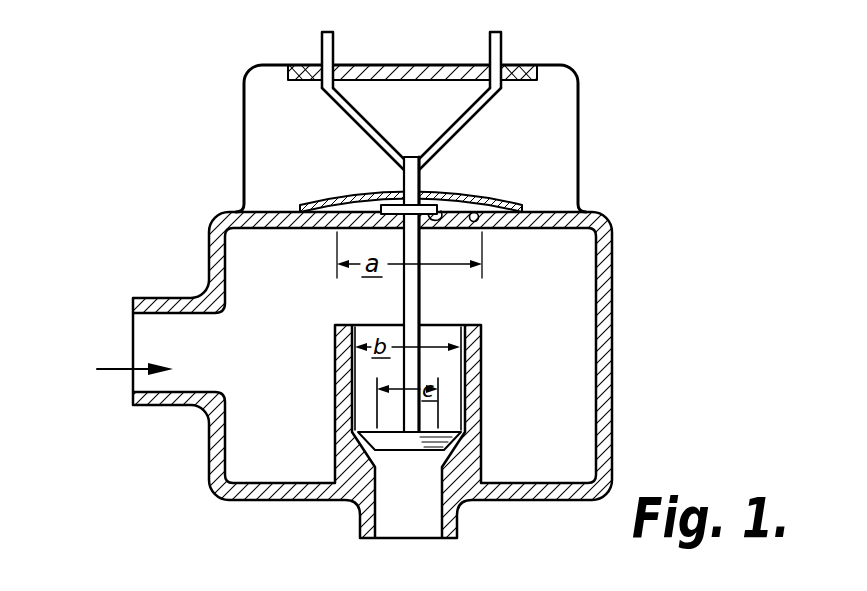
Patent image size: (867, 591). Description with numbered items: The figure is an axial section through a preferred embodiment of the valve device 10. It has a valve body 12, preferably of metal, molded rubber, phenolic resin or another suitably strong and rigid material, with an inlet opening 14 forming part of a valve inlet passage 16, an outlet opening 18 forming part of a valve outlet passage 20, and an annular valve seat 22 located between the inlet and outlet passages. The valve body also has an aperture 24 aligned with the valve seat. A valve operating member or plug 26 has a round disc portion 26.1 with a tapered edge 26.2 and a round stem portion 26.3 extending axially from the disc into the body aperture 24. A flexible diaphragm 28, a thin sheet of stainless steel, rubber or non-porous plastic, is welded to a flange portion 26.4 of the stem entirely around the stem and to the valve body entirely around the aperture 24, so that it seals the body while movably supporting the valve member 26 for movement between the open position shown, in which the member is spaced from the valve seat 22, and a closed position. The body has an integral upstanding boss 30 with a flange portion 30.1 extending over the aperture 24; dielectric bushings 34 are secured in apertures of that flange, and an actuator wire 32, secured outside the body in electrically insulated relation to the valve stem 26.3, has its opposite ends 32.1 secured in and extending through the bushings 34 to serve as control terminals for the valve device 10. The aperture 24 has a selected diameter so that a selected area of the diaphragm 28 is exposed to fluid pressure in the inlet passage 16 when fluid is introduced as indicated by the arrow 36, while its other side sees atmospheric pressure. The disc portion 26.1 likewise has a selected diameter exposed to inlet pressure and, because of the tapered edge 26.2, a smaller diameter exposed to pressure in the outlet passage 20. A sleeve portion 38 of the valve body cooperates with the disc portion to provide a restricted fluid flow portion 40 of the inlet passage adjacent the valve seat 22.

The valve device 10 is at (620, 200).
The valve body 12 is at (608, 326).
The inlet opening 14 is at (145, 337).
The valve inlet passage 16 is at (237, 361).
The outlet opening 18 is at (424, 542).
The valve outlet passage 20 is at (385, 533).
The annular valve seat 22 is at (352, 451).
The aperture 24 is at (484, 204).
The valve operating member 26 is at (428, 298).
The round disc portion 26.1 is at (392, 440).
The tapered edge 26.2 is at (466, 454).
The round stem portion 26.3 is at (404, 300).
The flange portion 26.4 is at (440, 210).
The flexible diaphragm 28 is at (343, 204).
The upstanding boss 30 is at (262, 131).
The boss flange portion 30.1 is at (310, 70).
The actuator wire 32 is at (347, 137).
The actuator wire ends 32.1 is at (325, 37).
The dielectric bushings 34 is at (338, 72).
The arrow 36 is at (112, 372).
The sleeve portion 38 is at (484, 352).
The restricted fluid flow portion 40 is at (457, 375).